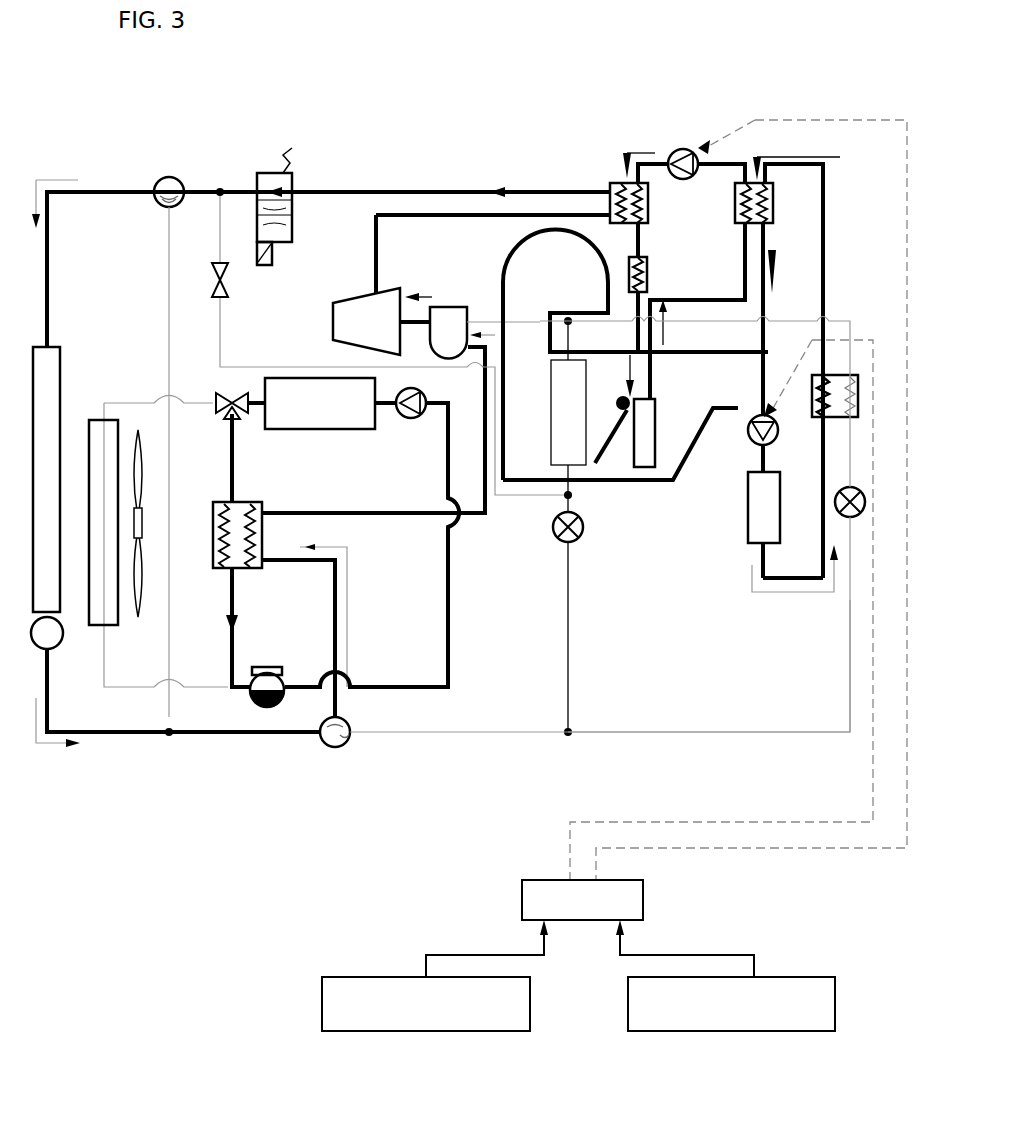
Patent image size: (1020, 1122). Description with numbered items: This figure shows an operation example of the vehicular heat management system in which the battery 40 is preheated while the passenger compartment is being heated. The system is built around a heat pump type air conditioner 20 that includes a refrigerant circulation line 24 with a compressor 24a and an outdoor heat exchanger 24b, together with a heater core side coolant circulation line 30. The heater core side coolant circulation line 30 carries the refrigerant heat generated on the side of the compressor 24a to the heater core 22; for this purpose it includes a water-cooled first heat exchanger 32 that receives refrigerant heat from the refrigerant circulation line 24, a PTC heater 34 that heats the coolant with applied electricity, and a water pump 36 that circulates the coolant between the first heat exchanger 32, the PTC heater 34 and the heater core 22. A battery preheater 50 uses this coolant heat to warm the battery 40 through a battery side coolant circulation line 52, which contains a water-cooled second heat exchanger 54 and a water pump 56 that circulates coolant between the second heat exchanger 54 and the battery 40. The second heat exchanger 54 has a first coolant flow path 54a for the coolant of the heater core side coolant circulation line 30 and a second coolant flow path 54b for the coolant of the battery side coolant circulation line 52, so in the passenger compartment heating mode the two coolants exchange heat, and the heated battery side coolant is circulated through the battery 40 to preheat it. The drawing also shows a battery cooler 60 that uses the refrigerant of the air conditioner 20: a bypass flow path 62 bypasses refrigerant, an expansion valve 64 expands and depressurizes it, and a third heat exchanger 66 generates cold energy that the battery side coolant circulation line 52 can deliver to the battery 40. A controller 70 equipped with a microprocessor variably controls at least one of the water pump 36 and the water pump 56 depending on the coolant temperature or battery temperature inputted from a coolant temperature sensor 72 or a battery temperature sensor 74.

The air conditioner 20 is at (445, 178).
The heater core 22 is at (650, 468).
The refrigerant circulation line 24 is at (380, 190).
The compressor 24a is at (355, 305).
The outdoor heat exchanger 24b is at (50, 368).
The heater core side coolant circulation line 30 is at (657, 160).
The first heat exchanger 32 is at (617, 183).
The PTC heater 34 is at (647, 262).
The water pump 36 is at (680, 150).
The battery 40 is at (748, 535).
The battery preheater 50 is at (757, 592).
The battery side coolant circulation line 52 is at (790, 580).
The second heat exchanger 54 is at (818, 175).
The first coolant flow path 54a is at (760, 228).
The second coolant flow path 54b is at (773, 208).
The water pump 56 is at (752, 445).
The battery cooler 60 is at (605, 737).
The bypass flow path 62 is at (660, 730).
The expansion valve 64 is at (840, 490).
The third heat exchanger 66 is at (845, 368).
The controller 70 is at (648, 900).
The coolant temperature sensor 72 is at (320, 1005).
The battery temperature sensor 74 is at (838, 1000).